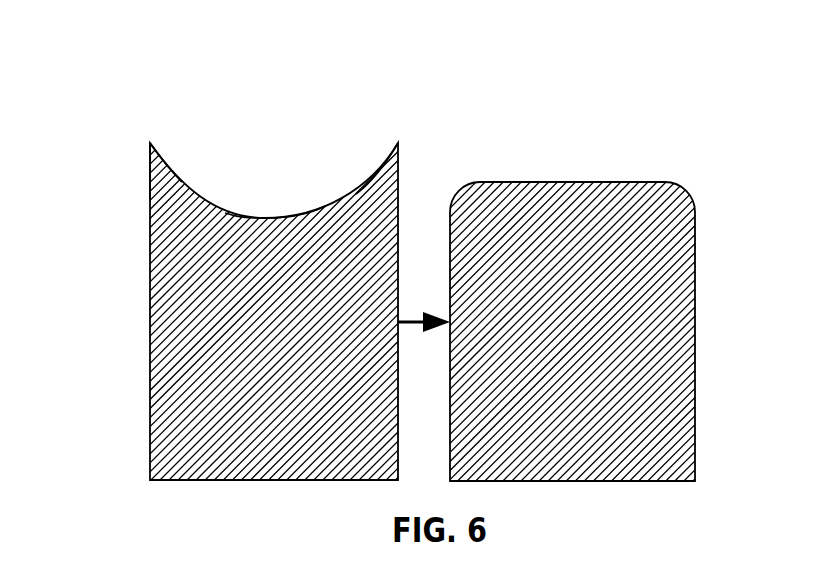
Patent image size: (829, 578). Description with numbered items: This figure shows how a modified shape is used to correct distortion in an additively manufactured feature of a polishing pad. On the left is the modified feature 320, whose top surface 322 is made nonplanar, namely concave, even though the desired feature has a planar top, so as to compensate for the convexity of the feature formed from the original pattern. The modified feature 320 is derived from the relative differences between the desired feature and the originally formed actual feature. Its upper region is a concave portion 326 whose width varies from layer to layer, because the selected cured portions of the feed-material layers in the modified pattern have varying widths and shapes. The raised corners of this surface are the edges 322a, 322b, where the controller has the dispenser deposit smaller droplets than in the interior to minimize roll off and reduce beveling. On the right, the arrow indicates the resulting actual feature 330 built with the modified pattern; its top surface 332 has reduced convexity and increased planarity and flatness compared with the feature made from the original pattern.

The modified feature 320 is at (122, 119).
The top surface 322 is at (268, 218).
The edge 322a is at (163, 163).
The edge 322b is at (388, 158).
The concave portion 326 is at (133, 143).
The actual feature 330 is at (455, 134).
The top surface 332 is at (572, 180).